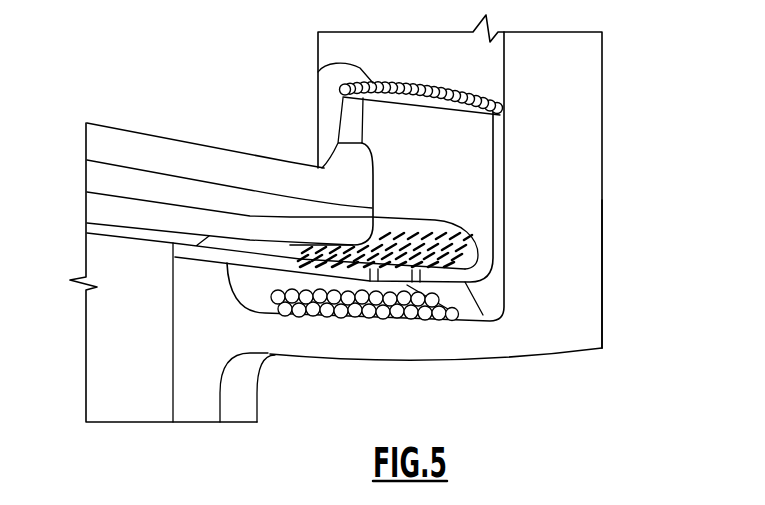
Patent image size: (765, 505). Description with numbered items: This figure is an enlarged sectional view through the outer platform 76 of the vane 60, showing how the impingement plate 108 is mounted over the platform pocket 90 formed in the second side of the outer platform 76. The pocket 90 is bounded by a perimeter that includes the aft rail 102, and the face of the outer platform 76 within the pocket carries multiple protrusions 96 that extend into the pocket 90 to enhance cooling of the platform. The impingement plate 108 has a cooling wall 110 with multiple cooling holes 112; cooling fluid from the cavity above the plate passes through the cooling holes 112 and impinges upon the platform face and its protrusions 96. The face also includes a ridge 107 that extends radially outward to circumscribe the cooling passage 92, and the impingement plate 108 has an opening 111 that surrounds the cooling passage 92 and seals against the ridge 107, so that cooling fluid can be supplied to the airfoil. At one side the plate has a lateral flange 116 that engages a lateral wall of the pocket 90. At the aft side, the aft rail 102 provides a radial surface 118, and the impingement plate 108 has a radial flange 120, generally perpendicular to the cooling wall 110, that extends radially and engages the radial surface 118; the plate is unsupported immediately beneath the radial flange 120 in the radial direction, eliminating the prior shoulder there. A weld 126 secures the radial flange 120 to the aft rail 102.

The vane 60 is at (656, 135).
The outer platform 76 is at (490, 370).
The platform pocket 90 is at (483, 302).
The cooling passage 92 is at (115, 337).
The protrusions 96 is at (323, 315).
The aft rail 102 is at (585, 84).
The ridge 107 is at (197, 277).
The impingement plate 108 is at (190, 128).
The cooling wall 110 is at (118, 222).
The opening 111 is at (106, 232).
The cooling holes 112 is at (413, 284).
The lateral flange 116 is at (132, 146).
The radial surface 118 is at (500, 72).
The radial flange 120 is at (463, 170).
The weld 126 is at (343, 89).